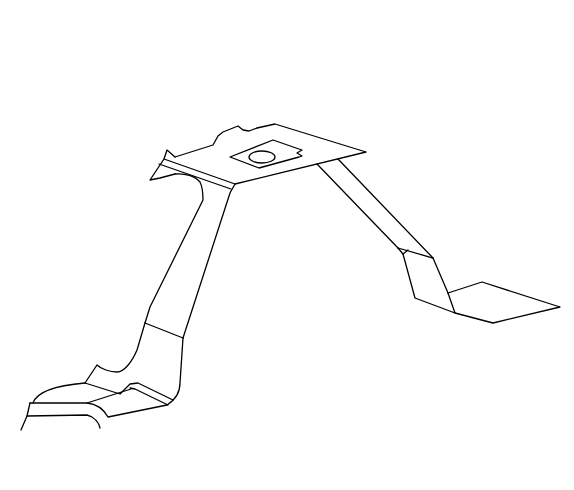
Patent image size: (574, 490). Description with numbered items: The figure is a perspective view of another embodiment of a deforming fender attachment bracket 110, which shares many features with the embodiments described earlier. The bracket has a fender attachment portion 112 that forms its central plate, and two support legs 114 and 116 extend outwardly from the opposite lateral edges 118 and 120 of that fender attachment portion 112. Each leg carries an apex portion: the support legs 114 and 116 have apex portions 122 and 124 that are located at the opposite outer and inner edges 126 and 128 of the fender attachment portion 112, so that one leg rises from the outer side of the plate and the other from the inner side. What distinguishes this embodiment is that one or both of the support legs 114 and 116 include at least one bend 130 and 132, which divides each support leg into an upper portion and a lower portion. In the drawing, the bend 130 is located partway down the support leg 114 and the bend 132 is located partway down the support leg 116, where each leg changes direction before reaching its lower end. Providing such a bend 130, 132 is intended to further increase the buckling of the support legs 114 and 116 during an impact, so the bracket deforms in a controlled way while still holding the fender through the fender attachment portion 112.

The deforming fender attachment bracket 110 is at (363, 105).
The fender attachment portion 112 is at (275, 97).
The support leg 114 is at (128, 262).
The support leg 116 is at (417, 215).
The lateral edge 118 is at (177, 174).
The lateral edge 120 is at (312, 136).
The apex portion 122 is at (218, 257).
The apex portion 124 is at (377, 172).
The outer edge 126 is at (201, 147).
The inner edge 128 is at (274, 176).
The bend 130 is at (157, 326).
The bend 132 is at (401, 250).